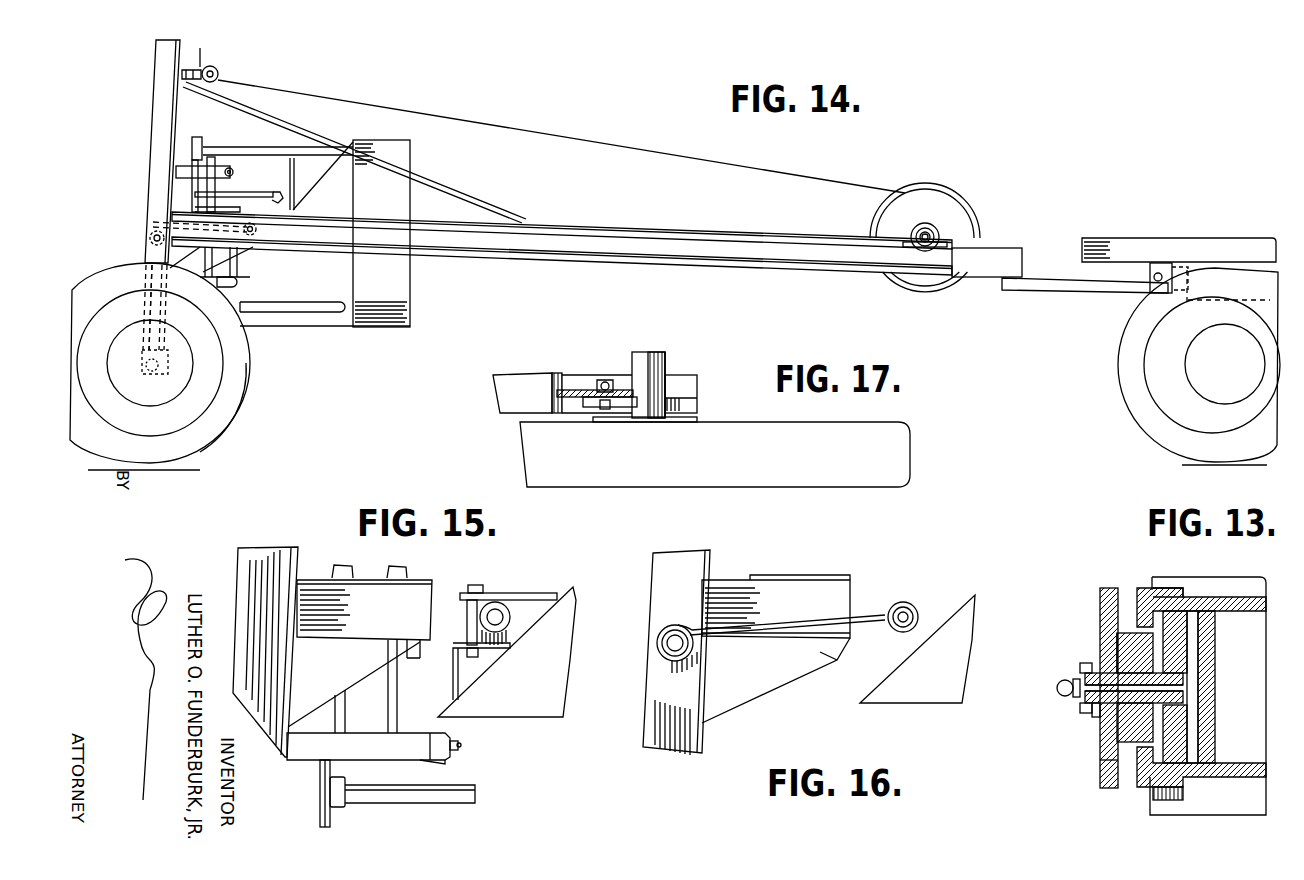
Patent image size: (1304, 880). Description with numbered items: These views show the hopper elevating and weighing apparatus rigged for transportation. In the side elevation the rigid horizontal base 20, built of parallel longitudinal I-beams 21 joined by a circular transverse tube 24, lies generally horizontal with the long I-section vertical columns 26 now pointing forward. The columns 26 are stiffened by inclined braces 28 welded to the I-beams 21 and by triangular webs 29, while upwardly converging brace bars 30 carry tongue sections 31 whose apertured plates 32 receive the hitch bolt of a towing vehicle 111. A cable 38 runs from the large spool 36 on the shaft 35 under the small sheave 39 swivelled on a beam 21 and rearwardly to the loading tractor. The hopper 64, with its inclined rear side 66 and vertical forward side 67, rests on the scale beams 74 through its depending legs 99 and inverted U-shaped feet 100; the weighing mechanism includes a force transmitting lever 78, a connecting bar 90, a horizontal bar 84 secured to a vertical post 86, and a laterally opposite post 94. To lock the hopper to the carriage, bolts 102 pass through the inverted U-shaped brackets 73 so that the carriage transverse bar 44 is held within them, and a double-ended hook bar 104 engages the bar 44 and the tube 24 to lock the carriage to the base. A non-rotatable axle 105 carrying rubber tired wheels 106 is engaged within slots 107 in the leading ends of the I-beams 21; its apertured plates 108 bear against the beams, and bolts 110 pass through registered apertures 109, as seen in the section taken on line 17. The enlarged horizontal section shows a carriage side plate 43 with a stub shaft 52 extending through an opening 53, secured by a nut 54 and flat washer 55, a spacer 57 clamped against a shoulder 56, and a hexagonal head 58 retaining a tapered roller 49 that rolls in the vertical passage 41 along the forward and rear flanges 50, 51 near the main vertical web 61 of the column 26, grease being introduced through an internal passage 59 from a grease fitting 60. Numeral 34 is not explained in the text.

In FIG. 14, the section line 17— 17 is at (148, 288).
In FIG. 14, the horizontal base 20 is at (155, 128).
In FIG. 14, the longitudinal I-beams 21 is at (157, 182).
In FIG. 17, the longitudinal I-beams 21 is at (522, 378).
In FIG. 15, the longitudinal I-beams 21 is at (272, 547).
In FIG. 16, the longitudinal I-beams 21 is at (704, 558).
In FIG. 14, the transverse tube 24 is at (151, 245).
In FIG. 16, the transverse tube 24 is at (694, 662).
In FIG. 14, the vertical columns 26 is at (498, 259).
In FIG. 15, the vertical columns 26 is at (364, 602).
In FIG. 16, the vertical columns 26 is at (776, 606).
In FIG. 13, the vertical columns 26 is at (1213, 656).
In FIG. 14, the inclined braces 28 is at (442, 195).
In FIG. 15, the triangular webs 29 is at (354, 686).
In FIG. 16, the triangular webs 29 is at (778, 670).
In FIG. 14, the converging brace bars 30 is at (998, 252).
In FIG. 14, the tongue sections 31 is at (1030, 287).
In FIG. 14, the apertured plates 32 is at (1150, 283).
In FIG. 14, the wheel 34 is at (938, 225).
In FIG. 14, the shaft 35 is at (911, 239).
In FIG. 14, the large spool 36 is at (923, 289).
In FIG. 14, the cable 38 is at (401, 101).
In FIG. 14, the small sheave 39 is at (219, 74).
In FIG. 13, the vertical passages 41 is at (1192, 628).
In FIG. 13, the carriage side plates 43 is at (1108, 588).
In FIG. 14, the transverse bar 44 is at (262, 233).
In FIG. 15, the transverse bar 44 is at (498, 608).
In FIG. 16, the transverse bar 44 is at (897, 628).
In FIG. 13, the rollers 49 is at (1187, 740).
In FIG. 13, the forward vertical flange 50 is at (1167, 795).
In FIG. 13, the rear vertical flange 51 is at (1173, 588).
In FIG. 13, the stub shafts 52 is at (1127, 700).
In FIG. 13, the openings 53 is at (1110, 657).
In FIG. 13, the nuts 54 is at (1090, 710).
In FIG. 13, the flat washers 55 is at (1100, 720).
In FIG. 13, the shoulders 56 is at (1107, 763).
In FIG. 13, the spacers 57 is at (1120, 643).
In FIG. 13, the hexagonal heads 58 is at (1197, 682).
In FIG. 13, the internal passages 59 is at (1088, 683).
In FIG. 13, the grease fittings 60 is at (1056, 690).
In FIG. 13, the main vertical webs 61 is at (1212, 712).
In FIG. 14, the hopper 64 is at (413, 304).
In FIG. 15, the hopper 64 is at (575, 631).
In FIG. 16, the hopper 64 is at (953, 608).
In FIG. 14, the rear side of hopper 66 is at (313, 188).
In FIG. 14, the forward side of hopper 67 is at (335, 328).
In FIG. 15, the inverted U-shaped brackets 73 is at (552, 594).
In FIG. 14, the scale beams 74 is at (193, 137).
In FIG. 15, the scale beams 74 is at (320, 772).
In FIG. 14, the force transmitting lever 78 is at (252, 201).
In FIG. 15, the horizontal bar 84 is at (452, 760).
In FIG. 15, the vertical post 86 is at (380, 750).
In FIG. 14, the connecting bar 90 is at (217, 188).
In FIG. 14, the vertical post 94 is at (236, 291).
In FIG. 14, the legs 99 is at (247, 153).
In FIG. 15, the legs 99 is at (442, 800).
In FIG. 14, the inverted U-shaped foot 100 is at (201, 148).
In FIG. 15, the inverted U-shaped foot 100 is at (347, 808).
In FIG. 15, the bolts 102 is at (466, 598).
In FIG. 14, the double-ended hook bar 104 is at (152, 219).
In FIG. 16, the double-ended hook bar 104 is at (868, 616).
In FIG. 14, the non-rotatable axle 105 is at (160, 366).
In FIG. 17, the non-rotatable axle 105 is at (667, 360).
In FIG. 14, the rubber tired wheels 106 is at (243, 404).
In FIG. 17, the rubber tired wheels 106 is at (735, 435).
In FIG. 14, the slots 107 is at (139, 358).
In FIG. 17, the slots 107 is at (689, 388).
In FIG. 14, the apertured plates 108 is at (141, 339).
In FIG. 17, the apertured plates 108 is at (568, 378).
In FIG. 17, the apertures 109 is at (620, 390).
In FIG. 14, the bolts 110 is at (190, 347).
In FIG. 17, the bolts 110 is at (606, 378).
In FIG. 14, the towing vehicle 111 is at (1192, 242).